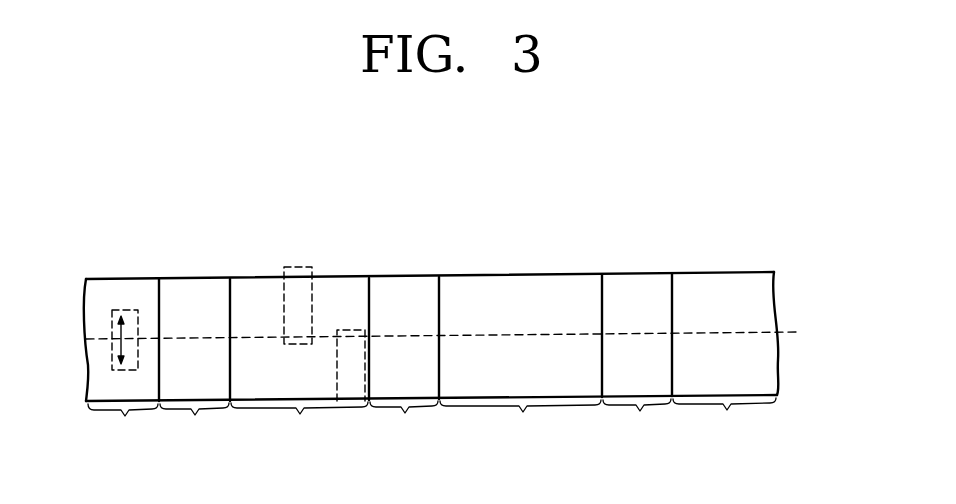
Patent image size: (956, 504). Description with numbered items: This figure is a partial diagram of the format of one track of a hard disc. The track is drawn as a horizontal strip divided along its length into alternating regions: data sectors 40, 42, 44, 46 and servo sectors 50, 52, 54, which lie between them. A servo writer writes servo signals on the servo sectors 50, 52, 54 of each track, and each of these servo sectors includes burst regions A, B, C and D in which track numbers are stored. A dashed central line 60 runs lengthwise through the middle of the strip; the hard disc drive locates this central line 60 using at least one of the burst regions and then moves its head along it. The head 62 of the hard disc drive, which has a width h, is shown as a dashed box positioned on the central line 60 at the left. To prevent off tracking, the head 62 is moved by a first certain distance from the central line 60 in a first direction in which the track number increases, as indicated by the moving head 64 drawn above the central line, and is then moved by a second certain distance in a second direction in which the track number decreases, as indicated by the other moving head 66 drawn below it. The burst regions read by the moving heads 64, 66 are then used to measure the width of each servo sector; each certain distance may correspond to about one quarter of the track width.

The data sector 40 is at (123, 427).
The data sector 42 is at (299, 363).
The data sector 44 is at (520, 361).
The data sector 46 is at (724, 358).
The servo sector 50 is at (194, 364).
The servo sector 52 is at (403, 362).
The servo sector 54 is at (636, 360).
The central line 60 is at (790, 330).
The head 62 is at (133, 310).
The moving head 64 is at (303, 267).
The moving head 66 is at (345, 410).